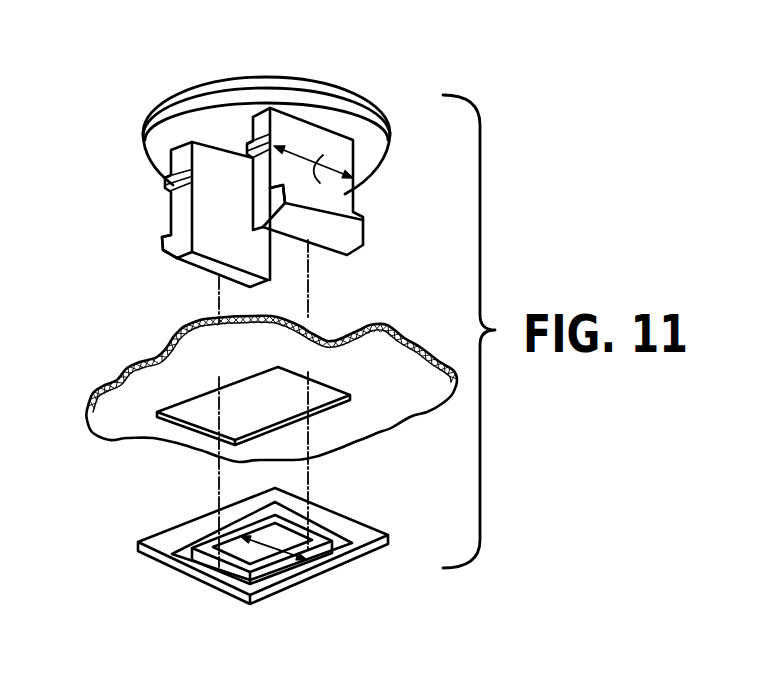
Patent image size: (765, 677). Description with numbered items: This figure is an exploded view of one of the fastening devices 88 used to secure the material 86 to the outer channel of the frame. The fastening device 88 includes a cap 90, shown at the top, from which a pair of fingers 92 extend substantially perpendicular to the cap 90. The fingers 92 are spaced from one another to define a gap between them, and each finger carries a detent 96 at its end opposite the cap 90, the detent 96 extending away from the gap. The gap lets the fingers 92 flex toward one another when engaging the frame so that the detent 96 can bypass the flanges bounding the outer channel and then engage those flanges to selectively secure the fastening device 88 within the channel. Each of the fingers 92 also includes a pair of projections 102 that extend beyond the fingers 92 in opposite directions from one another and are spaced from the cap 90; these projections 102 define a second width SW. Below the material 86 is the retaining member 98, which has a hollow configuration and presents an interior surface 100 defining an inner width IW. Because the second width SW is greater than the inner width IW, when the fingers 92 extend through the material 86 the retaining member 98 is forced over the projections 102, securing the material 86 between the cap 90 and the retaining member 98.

The material 86 is at (138, 425).
The fastening device 88 is at (329, 86).
The cap 90 is at (160, 142).
The fingers 92 is at (222, 237).
The detent 96 is at (163, 249).
The retaining member 98 is at (363, 550).
The interior surface 100 is at (205, 563).
The projections 102 is at (249, 152).
The second width SW is at (345, 186).
The inner width IW is at (272, 547).